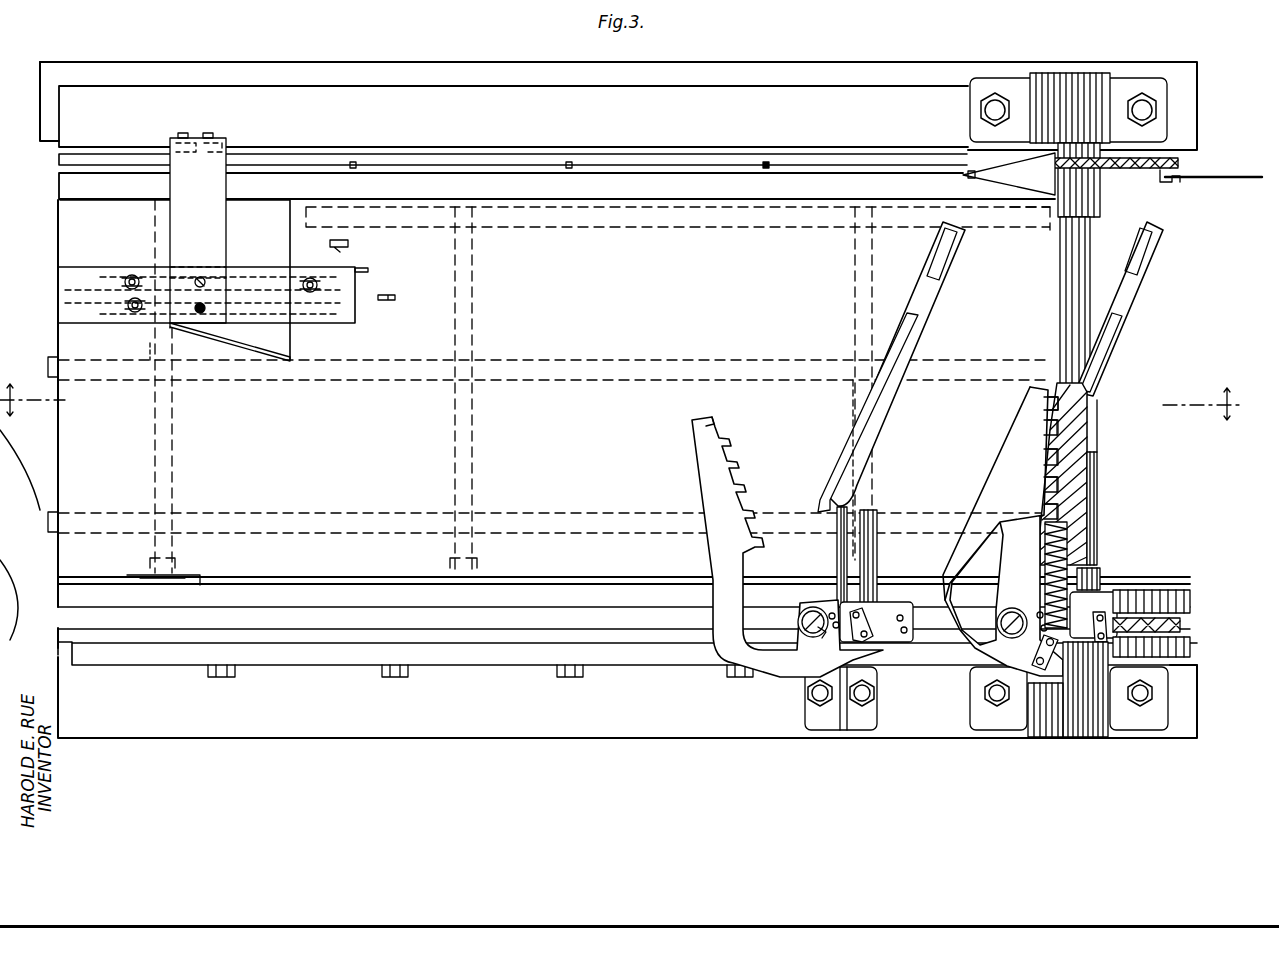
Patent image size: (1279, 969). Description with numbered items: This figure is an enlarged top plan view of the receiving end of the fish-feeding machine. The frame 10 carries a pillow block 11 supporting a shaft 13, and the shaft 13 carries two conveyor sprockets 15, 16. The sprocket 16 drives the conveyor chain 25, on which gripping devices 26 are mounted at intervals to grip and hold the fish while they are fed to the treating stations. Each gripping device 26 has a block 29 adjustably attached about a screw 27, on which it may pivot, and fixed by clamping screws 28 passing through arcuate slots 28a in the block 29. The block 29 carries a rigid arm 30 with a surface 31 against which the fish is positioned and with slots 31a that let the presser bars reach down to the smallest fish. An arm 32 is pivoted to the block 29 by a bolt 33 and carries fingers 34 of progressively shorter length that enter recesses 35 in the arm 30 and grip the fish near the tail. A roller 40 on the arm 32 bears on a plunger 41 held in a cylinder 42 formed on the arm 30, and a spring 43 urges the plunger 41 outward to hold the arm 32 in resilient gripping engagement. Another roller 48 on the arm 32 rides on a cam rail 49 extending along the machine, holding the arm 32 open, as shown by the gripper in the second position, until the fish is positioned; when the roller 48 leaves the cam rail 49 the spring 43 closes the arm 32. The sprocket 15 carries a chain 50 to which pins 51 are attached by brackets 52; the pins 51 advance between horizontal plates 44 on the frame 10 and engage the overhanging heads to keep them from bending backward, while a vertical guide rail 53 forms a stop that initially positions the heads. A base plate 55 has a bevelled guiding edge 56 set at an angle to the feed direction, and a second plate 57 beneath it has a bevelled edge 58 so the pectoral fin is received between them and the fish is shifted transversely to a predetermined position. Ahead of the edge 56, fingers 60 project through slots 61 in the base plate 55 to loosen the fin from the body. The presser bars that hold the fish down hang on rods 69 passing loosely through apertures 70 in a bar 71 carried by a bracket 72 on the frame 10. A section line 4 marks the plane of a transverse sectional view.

The section line 4- 4 is at (627, 402).
The frame 10 is at (748, 70).
The pillow block 11 is at (1115, 78).
The shaft 13 is at (1088, 274).
The conveyor sprocket 15 is at (1150, 170).
The conveyor sprocket 16 is at (1176, 600).
The conveyor chain 25 is at (1182, 628).
The gripping devices 26 is at (926, 359).
The screw 27 is at (878, 650).
The clamping screws 28 is at (870, 615).
The arcuate slots 28a is at (1100, 625).
The block 29 is at (880, 603).
The rigid arm 30 is at (887, 442).
The surface 31 is at (920, 270).
The slots 31a is at (935, 297).
The arm 32 is at (702, 489).
The bolt 33 is at (812, 607).
The fingers 34 is at (755, 512).
The recesses 35 is at (1085, 477).
The roller 40 is at (1106, 662).
The plunger 41 is at (1093, 570).
The cylinder 42 is at (1068, 540).
The spring 43 is at (1096, 520).
The horizontal plates 44 is at (1016, 160).
The roller 48 is at (1034, 660).
The cam rail 49 is at (683, 666).
The chain 50 is at (1180, 160).
The pins 51 is at (570, 166).
The brackets 52 is at (1168, 183).
The vertical guide rail 53 is at (858, 100).
The base plate 55 is at (554, 386).
The bevelled guiding edge 56 is at (232, 345).
The second plate 57 is at (62, 227).
The bevelled edge 58 is at (175, 330).
The fingers 60 is at (345, 248).
The slots 61 is at (396, 296).
The rods 69 is at (133, 276).
The apertures 70 is at (130, 308).
The bar 71 is at (90, 267).
The bracket 72 is at (226, 238).